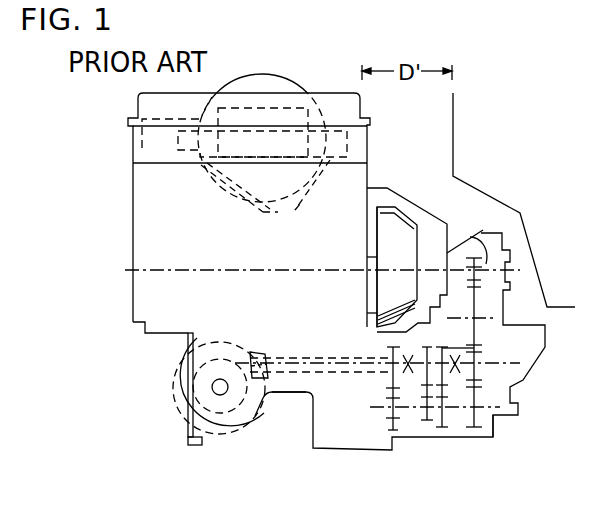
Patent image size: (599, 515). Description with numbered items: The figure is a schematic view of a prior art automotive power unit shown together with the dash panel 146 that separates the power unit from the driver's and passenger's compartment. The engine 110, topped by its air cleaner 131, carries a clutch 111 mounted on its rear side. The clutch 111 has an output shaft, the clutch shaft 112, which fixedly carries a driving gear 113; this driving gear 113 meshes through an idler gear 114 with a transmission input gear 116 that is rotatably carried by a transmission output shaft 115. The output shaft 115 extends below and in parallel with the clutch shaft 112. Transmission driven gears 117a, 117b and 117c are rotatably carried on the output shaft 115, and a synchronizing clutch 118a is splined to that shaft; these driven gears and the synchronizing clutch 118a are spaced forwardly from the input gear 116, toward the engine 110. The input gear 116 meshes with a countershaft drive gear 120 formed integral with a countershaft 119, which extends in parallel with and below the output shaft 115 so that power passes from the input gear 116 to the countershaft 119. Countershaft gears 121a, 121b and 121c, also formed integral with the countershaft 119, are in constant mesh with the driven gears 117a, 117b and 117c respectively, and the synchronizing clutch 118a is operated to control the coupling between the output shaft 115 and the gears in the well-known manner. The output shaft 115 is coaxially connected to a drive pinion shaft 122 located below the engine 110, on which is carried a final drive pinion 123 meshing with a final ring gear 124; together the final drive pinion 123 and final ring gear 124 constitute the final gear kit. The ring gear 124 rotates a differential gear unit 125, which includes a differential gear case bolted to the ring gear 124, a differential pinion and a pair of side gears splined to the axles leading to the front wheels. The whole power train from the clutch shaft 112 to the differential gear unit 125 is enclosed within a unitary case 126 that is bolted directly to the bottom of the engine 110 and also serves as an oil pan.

The engine 110 is at (362, 180).
The clutch 111 is at (395, 200).
The clutch shaft 112 is at (467, 243).
The driving gear 113 is at (495, 238).
The idler gear 114 is at (476, 297).
The transmission output shaft 115 is at (478, 352).
The transmission input gear 116 is at (481, 366).
The transmission driven gear 117a is at (447, 371).
The transmission driven gear 117b is at (391, 347).
The transmission driven gear 117c is at (390, 387).
The synchronizing clutch 118a is at (411, 450).
The countershaft 119 is at (482, 380).
The countershaft drive gear 120 is at (493, 424).
The countershaft gear 121a is at (444, 425).
The countershaft gear 121b is at (428, 418).
The countershaft gear 121c is at (391, 418).
The drive pinion shaft 122 is at (338, 356).
The final drive pinion 123 is at (262, 352).
The final ring gear 124 is at (175, 385).
The differential gear unit 125 is at (228, 410).
The unitary case 126 is at (286, 393).
The air cleaner 131 is at (285, 78).
The dash panel 146 is at (455, 104).